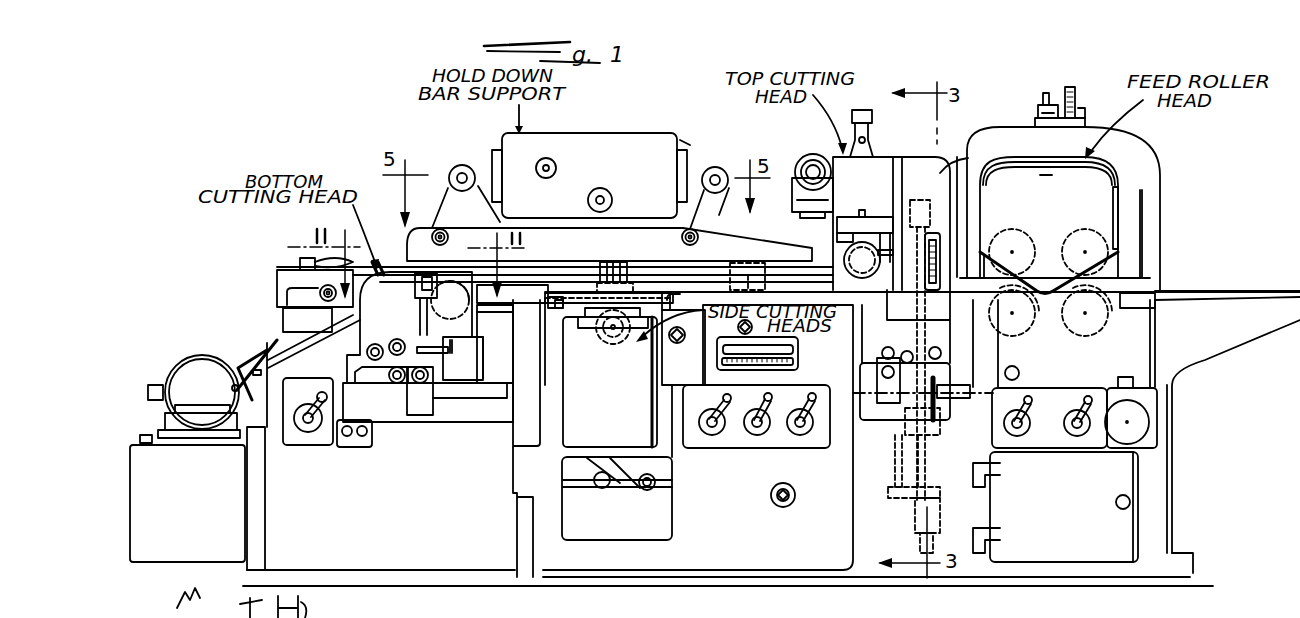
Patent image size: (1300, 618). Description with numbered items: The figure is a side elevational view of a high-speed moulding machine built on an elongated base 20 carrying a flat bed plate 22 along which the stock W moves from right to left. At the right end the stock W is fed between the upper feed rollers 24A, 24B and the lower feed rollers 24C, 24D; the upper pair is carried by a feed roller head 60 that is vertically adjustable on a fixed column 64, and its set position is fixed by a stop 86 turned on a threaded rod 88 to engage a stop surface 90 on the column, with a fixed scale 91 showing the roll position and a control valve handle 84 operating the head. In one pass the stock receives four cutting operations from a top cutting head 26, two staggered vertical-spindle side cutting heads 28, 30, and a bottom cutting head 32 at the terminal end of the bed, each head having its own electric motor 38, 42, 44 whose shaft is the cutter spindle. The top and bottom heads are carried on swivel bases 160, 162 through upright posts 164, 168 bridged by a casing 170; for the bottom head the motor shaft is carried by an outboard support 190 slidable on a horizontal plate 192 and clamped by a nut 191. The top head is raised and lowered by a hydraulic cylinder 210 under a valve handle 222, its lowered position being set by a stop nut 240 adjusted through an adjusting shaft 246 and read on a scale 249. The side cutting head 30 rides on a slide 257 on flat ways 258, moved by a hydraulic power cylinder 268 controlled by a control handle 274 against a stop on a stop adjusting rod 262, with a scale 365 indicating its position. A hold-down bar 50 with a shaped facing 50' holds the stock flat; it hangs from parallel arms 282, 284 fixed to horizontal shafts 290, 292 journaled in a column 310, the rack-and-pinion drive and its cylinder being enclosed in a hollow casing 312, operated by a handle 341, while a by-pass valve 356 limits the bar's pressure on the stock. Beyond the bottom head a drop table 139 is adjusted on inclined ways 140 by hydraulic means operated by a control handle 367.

The base 20 is at (482, 563).
The bed plate 22 is at (1223, 284).
The feed roller 24A is at (1098, 229).
The feed roller 24B is at (1010, 219).
The feed roller 24C is at (1032, 337).
The feed roller 24D is at (1120, 335).
The top cutting head 26 is at (888, 155).
The side cutting head 28 is at (755, 273).
The side cutting head 30 is at (648, 288).
The bottom cutting head 32 is at (378, 261).
The electric motor 38 is at (839, 254).
The electric motor 42 is at (580, 427).
The electric motor 44 is at (433, 303).
The hold-down bar 50 is at (609, 228).
The facing 50' is at (788, 263).
The feed roller head 60 is at (1128, 180).
The fixed column 64 is at (1120, 150).
The control valve handle 84 is at (1032, 400).
The stop 86 is at (1038, 107).
The threaded rod 88 is at (1043, 97).
The stop surface 90 is at (1040, 122).
The fixed scale 91 is at (1075, 103).
The drop table 139 is at (280, 288).
The inclined ways 140 is at (277, 343).
The swivel base 160 is at (955, 392).
The swivel base 162 is at (450, 398).
The upright post 164 is at (958, 170).
The upright post 168 is at (368, 312).
The casing 170 is at (383, 378).
The outboard support 190 is at (433, 318).
The nut 191 is at (450, 352).
The horizontal plate 192 is at (498, 328).
The hydraulic cylinder 210 is at (887, 427).
The valve handle 222 is at (812, 396).
The stop nut 240 is at (913, 522).
The adjusting shaft 246 is at (933, 352).
The scale 249 is at (926, 278).
The slide 257 is at (667, 300).
The flat ways 258 is at (560, 303).
The stop adjusting rod 262 is at (678, 341).
The hydraulic power cylinder 268 is at (600, 334).
The control handle 274 is at (777, 386).
The arm 282 is at (455, 228).
The arm 284 is at (705, 216).
The horizontal shaft 290 is at (462, 168).
The horizontal shaft 292 is at (715, 176).
The column 310 is at (680, 140).
The hollow casing 312 is at (605, 127).
The handle 341 is at (607, 197).
The by-pass valve 356 is at (558, 167).
The scale 365 is at (780, 352).
The control handle 367 is at (313, 394).
The stock W is at (1122, 278).